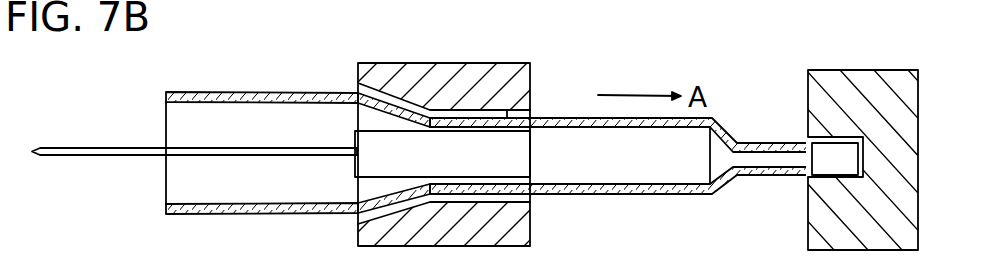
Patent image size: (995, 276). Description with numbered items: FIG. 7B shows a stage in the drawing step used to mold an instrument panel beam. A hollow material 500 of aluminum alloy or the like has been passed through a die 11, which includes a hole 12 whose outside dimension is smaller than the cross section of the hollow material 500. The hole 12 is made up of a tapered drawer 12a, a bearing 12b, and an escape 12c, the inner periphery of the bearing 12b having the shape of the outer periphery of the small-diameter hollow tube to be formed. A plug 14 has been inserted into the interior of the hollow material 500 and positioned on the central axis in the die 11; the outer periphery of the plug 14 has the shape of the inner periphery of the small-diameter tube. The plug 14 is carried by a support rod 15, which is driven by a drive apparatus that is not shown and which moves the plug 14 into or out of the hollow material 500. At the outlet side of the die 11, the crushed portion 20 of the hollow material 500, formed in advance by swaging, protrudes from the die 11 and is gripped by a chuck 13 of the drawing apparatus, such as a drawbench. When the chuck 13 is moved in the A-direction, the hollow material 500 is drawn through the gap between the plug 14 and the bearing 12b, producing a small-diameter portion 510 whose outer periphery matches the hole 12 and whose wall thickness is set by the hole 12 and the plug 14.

The hollow material 500 is at (246, 188).
The small-diameter portion 510 is at (644, 192).
The die 11 is at (510, 224).
The hole 12 is at (358, 237).
The tapered drawer 12a is at (285, 7).
The bearing 12b is at (510, 0).
The escape 12c is at (687, 12).
The chuck 13 is at (862, 85).
The plug 14 is at (356, 105).
The support rod 15 is at (78, 156).
The crushed portion 20 is at (803, 200).